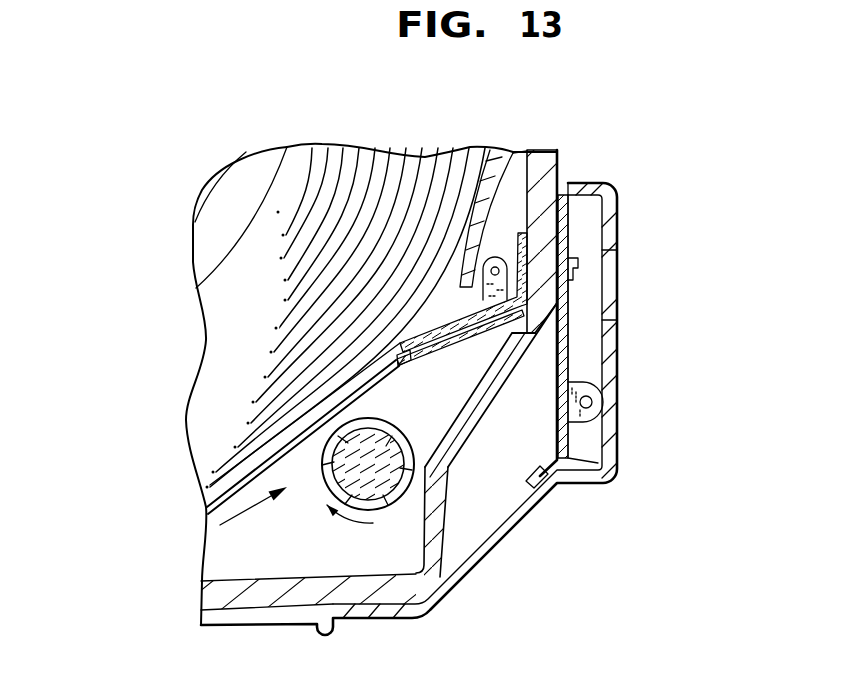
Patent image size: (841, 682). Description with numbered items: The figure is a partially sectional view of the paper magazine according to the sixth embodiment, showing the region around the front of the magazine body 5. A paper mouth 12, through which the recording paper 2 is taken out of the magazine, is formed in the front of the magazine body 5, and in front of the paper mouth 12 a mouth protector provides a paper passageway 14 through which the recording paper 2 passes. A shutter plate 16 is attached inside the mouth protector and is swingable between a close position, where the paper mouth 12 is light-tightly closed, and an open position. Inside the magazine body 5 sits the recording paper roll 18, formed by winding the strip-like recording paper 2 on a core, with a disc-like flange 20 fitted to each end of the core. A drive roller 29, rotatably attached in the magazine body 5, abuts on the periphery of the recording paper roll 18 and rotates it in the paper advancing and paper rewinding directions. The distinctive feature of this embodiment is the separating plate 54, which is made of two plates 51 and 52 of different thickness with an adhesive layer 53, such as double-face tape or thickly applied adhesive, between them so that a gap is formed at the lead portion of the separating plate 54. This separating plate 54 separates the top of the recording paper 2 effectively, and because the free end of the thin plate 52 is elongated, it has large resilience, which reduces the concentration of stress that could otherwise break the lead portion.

The recording paper 2 is at (400, 413).
The magazine body 5 is at (515, 554).
The paper mouth 12 is at (568, 305).
The paper passageway 14 is at (607, 250).
The shutter plate 16 is at (582, 440).
The recording paper roll 18 is at (487, 181).
The flange 20 is at (246, 131).
The drive roller 29 is at (390, 540).
The plate 51 is at (463, 318).
The thin plate 52 is at (420, 352).
The adhesive layer 53 is at (424, 334).
The separating plate 54 is at (476, 361).